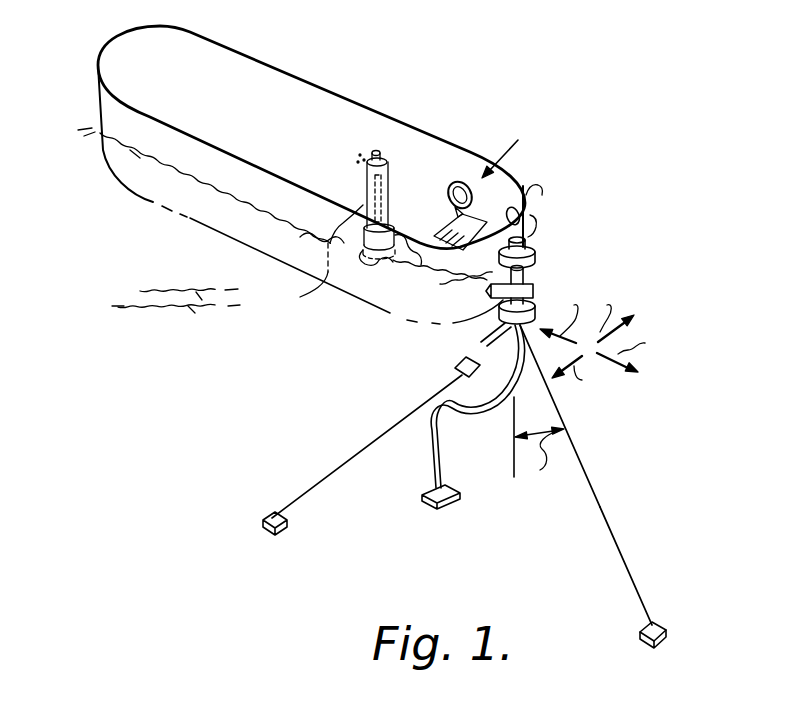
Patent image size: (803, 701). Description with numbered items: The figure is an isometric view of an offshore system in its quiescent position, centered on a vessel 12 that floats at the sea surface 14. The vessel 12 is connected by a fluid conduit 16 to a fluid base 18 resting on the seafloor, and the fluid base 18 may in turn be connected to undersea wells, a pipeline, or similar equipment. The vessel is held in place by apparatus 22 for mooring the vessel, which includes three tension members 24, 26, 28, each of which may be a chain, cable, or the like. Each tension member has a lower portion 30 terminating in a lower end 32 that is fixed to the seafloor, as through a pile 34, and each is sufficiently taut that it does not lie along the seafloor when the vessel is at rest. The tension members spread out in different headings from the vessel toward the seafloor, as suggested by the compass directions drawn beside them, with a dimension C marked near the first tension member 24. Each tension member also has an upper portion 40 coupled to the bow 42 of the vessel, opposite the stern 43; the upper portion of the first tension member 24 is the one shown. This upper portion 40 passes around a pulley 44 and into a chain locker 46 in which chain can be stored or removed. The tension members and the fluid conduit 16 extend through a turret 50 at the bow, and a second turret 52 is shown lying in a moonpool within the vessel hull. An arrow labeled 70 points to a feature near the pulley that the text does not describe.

The vessel 12 is at (302, 80).
The sea surface 14 is at (193, 272).
The fluid conduit 16 is at (480, 417).
The fluid base 18 is at (455, 503).
The apparatus for mooring the vessel 22 is at (615, 423).
The first tension member 24 is at (600, 481).
The tension member 26 is at (338, 463).
The tension member 28 is at (447, 342).
The lower portion 30 is at (633, 588).
The lower end 32 is at (660, 622).
The pile 34 is at (640, 634).
The upper portion 40 is at (523, 217).
The bow 42 is at (513, 185).
The stern 43 is at (110, 44).
The pulley 44 is at (442, 183).
The chain locker 46 is at (383, 312).
The turret 50 is at (530, 247).
The turret 52 is at (324, 279).
The opening 70 is at (513, 149).